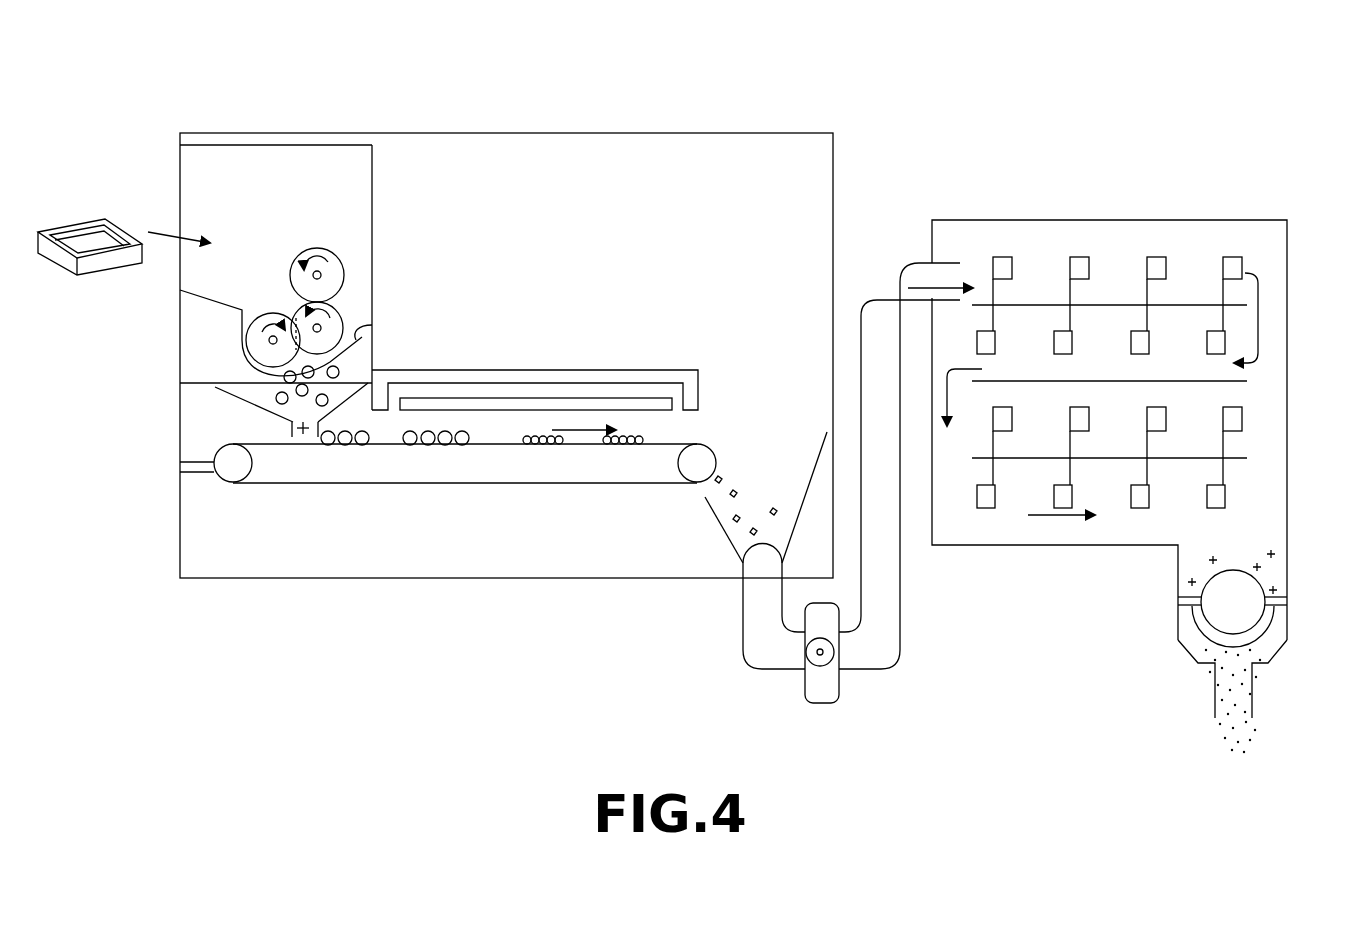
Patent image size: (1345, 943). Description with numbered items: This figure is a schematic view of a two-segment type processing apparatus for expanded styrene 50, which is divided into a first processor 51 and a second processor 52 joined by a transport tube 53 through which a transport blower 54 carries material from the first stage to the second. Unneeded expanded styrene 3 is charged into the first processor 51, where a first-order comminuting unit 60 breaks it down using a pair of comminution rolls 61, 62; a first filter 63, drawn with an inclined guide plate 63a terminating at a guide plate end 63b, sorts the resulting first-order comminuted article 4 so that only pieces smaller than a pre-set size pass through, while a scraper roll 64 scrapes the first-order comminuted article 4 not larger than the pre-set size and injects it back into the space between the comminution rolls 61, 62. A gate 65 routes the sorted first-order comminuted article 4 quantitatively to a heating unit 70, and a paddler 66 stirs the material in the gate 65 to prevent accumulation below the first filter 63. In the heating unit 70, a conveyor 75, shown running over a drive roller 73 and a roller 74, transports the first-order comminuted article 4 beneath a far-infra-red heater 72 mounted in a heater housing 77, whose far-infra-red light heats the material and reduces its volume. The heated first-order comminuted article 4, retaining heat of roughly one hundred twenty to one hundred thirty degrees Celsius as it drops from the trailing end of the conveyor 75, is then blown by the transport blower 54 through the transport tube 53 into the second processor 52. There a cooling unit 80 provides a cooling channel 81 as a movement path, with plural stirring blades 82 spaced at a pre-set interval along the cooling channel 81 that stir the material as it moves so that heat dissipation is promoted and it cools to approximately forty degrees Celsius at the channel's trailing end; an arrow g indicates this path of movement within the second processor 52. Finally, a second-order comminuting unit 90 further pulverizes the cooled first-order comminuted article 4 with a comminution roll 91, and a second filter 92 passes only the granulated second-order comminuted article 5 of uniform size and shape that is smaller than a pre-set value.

The expanded styrene 3 is at (105, 260).
The first-order comminuted article 4 is at (278, 396).
The second-order comminuted article 5 is at (1230, 703).
The processing apparatus for expanded styrene 50 is at (652, 82).
The first processor 51 is at (492, 579).
The second processor 52 is at (1075, 546).
The transport tube 53 is at (868, 670).
The transport blower 54 is at (805, 698).
The first-order comminuting unit 60 is at (468, 267).
The comminution roll 61 is at (250, 338).
The comminution roll 62 is at (340, 313).
The first filter 63 is at (340, 364).
The inclined guide plate 63a is at (184, 292).
The guide plate end 63b is at (364, 337).
The scraper roll 64 is at (336, 269).
The gate 65 is at (213, 388).
The paddler 66 is at (288, 422).
The heating unit 70 is at (581, 330).
The far-infra-red heater 72 is at (521, 398).
The drive roller 73 is at (705, 456).
The roller 74 is at (227, 458).
The conveyor 75 is at (473, 487).
The heater housing 77 is at (656, 376).
The cooling unit 80 is at (1175, 175).
The cooling channel 81 is at (1047, 250).
The stirring blades 82 is at (1235, 260).
The second-order comminuting unit 90 is at (1166, 634).
The comminution roll 91 is at (1250, 608).
The second filter 92 is at (1253, 640).